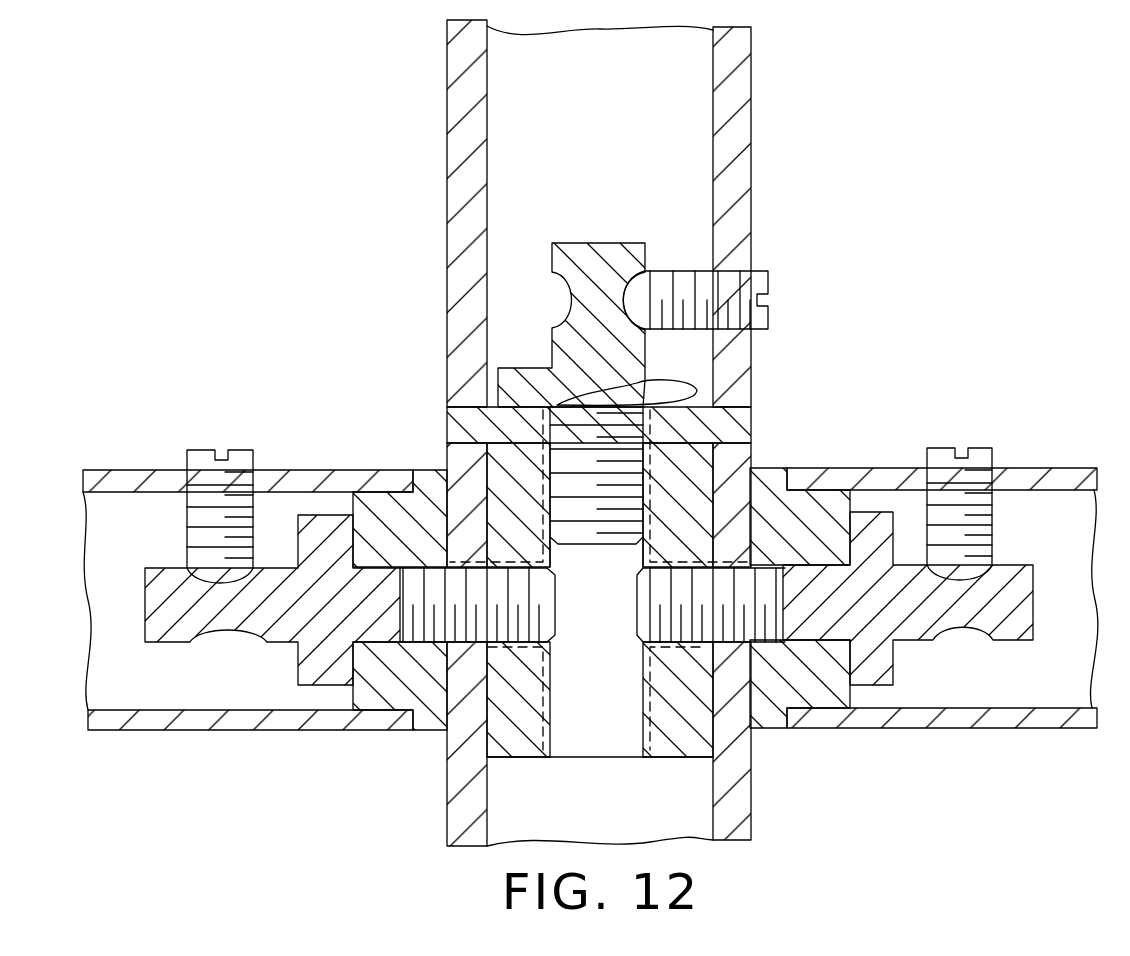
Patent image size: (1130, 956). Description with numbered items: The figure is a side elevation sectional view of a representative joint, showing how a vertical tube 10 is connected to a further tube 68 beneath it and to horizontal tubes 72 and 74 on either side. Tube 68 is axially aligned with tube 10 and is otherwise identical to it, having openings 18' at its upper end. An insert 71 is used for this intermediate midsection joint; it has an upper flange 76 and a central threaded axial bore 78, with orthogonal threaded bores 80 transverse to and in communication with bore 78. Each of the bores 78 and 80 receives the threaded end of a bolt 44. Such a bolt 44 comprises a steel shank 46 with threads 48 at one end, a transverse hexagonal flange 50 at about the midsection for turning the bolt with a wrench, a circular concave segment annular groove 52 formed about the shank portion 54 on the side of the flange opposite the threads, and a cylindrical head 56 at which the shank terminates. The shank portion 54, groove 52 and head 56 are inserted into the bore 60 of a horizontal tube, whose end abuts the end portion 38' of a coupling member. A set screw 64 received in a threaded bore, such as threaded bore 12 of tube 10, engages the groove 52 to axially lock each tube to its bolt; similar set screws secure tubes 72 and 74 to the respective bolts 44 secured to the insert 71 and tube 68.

The tube 10 is at (752, 122).
The threaded bore 12 is at (727, 268).
The openings 18' is at (533, 699).
The end portion 38' is at (601, 492).
The bolt 44 is at (601, 243).
The shank 46 is at (380, 627).
The threads 48 is at (533, 625).
The hexagonal flange 50 is at (685, 396).
The annular groove 52 is at (567, 294).
The shank portion 54 is at (552, 340).
The head 56 is at (552, 258).
The bore 60 is at (107, 493).
The set screw 64 is at (243, 450).
The tube 68 is at (733, 803).
The insert 71 is at (680, 738).
The horizontal tube 72 is at (113, 470).
The horizontal tube 74 is at (1043, 468).
The upper flange 76 is at (740, 426).
The central threaded axial bore 78 is at (638, 547).
The orthogonal threaded bores 80 is at (675, 643).